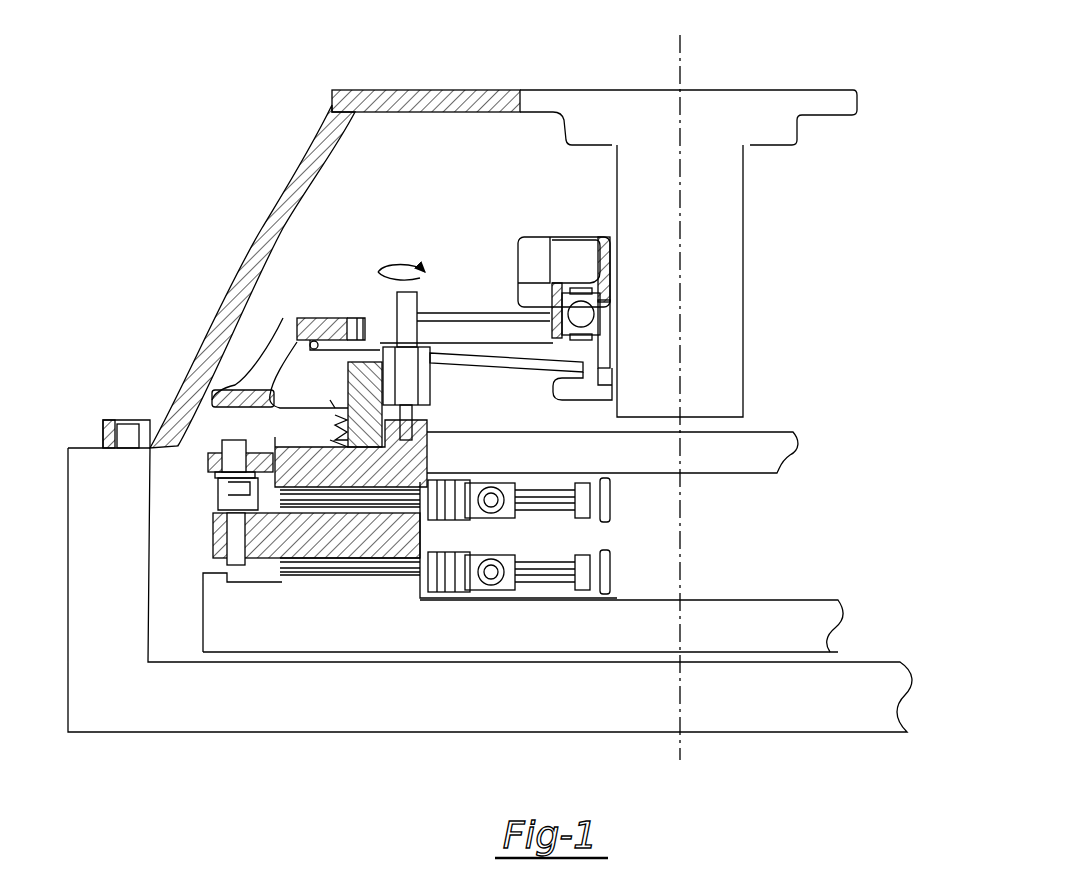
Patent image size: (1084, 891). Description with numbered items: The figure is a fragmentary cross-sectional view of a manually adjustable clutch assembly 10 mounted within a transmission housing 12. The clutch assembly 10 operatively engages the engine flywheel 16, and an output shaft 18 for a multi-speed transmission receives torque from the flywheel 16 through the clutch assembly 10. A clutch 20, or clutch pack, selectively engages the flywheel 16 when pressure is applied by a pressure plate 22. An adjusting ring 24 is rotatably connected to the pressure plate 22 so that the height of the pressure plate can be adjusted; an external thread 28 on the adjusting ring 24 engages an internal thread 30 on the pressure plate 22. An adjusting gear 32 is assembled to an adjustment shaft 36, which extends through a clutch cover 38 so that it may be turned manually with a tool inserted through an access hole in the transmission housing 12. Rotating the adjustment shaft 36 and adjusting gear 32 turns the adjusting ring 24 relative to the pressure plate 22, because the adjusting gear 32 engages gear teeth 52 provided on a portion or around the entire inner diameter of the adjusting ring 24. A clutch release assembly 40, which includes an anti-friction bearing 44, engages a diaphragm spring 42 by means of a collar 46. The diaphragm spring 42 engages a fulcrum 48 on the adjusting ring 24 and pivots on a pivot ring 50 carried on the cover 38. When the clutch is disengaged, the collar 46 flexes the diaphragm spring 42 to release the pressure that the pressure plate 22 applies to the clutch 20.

The clutch assembly 10 is at (338, 242).
The transmission housing 12 is at (252, 247).
The engine flywheel 16 is at (207, 623).
The output shaft 18 is at (735, 287).
The clutch 20 is at (323, 573).
The pressure plate 22 is at (427, 447).
The adjusting ring 24 is at (348, 365).
The external thread 28 is at (365, 408).
The internal thread 30 is at (343, 435).
The adjusting gear 32 is at (417, 368).
The adjustment shaft 36 is at (412, 310).
The clutch cover 38 is at (293, 337).
The clutch release assembly 40 is at (574, 232).
The diaphragm spring 42 is at (548, 363).
The anti-friction bearing 44 is at (583, 317).
The collar 46 is at (590, 383).
The fulcrum 48 is at (380, 345).
The pivot ring 50 is at (310, 343).
The gear teeth 52 is at (405, 400).